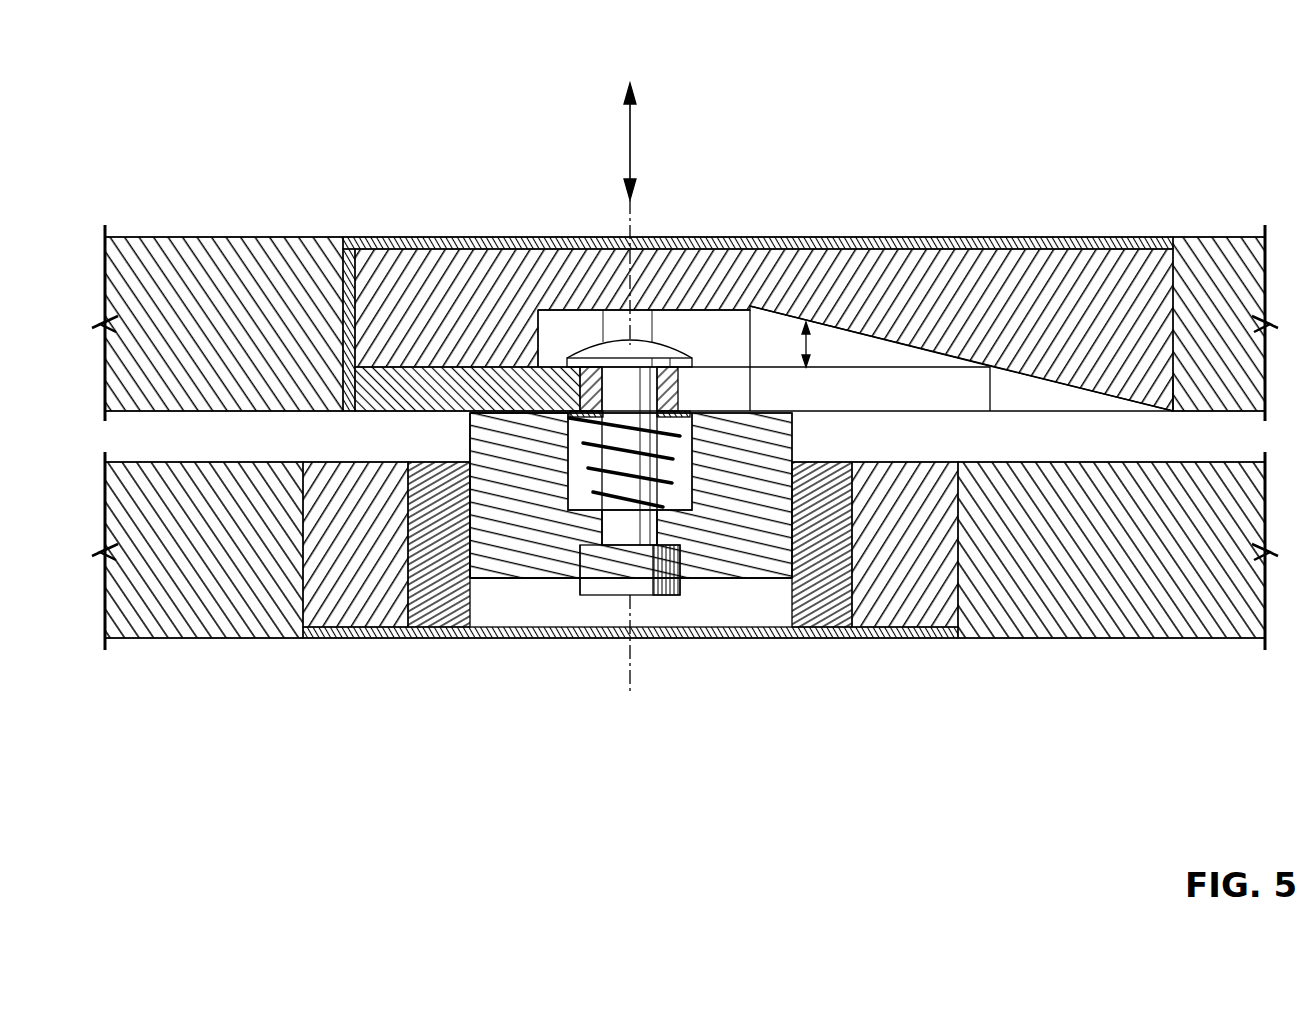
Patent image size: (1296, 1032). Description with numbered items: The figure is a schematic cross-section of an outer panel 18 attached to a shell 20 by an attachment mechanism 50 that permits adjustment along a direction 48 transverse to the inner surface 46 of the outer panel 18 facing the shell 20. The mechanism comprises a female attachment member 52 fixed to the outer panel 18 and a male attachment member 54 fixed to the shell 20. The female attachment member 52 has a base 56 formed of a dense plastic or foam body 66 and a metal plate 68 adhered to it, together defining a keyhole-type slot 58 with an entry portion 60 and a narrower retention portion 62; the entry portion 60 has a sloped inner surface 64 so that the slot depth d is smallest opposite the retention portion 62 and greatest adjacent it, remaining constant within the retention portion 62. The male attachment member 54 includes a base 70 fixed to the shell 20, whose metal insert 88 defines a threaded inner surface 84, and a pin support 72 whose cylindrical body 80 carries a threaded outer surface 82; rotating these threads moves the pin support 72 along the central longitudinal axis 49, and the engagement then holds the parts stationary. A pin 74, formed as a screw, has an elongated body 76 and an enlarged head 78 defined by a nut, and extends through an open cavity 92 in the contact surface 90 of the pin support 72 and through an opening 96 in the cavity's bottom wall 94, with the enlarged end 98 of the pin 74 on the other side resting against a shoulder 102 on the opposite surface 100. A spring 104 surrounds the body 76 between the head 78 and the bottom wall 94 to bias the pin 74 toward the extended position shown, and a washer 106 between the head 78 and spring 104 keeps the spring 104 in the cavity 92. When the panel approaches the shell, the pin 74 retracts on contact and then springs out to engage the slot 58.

The outer panel 18 is at (1195, 262).
The shell 20 is at (1172, 607).
The inner surface 46 is at (1183, 412).
The direction 48 is at (630, 147).
The central longitudinal axis 49 is at (632, 667).
The attachment mechanism 50 is at (1184, 118).
The female attachment member 52 is at (1127, 235).
The male attachment member 54 is at (880, 652).
The base 56 is at (1065, 270).
The slot 58 is at (772, 335).
The entry portion 60 is at (880, 353).
The retention portion 62 is at (608, 390).
The sloped inner surface 64 is at (937, 356).
The body 66 is at (373, 268).
The metal plate 68 is at (948, 385).
The base 70 is at (945, 620).
The pin support 72 is at (470, 485).
The pin 74 is at (643, 580).
The elongated body 76 is at (587, 327).
The enlarged head 78 is at (660, 358).
The cylindrical body 80 is at (487, 537).
The threaded outer surface 82 is at (468, 447).
The threaded inner surface 84 is at (517, 582).
The metal insert 88 is at (423, 612).
The contact surface 90 is at (493, 408).
The open cavity 92 is at (687, 443).
The bottom wall 94 is at (673, 533).
The opening 96 is at (608, 527).
The enlarged end 98 is at (665, 614).
The surface 100 is at (482, 577).
The shoulder 102 is at (590, 547).
The spring 104 is at (568, 472).
The washer 106 is at (580, 415).
The slot depth d is at (806, 322).